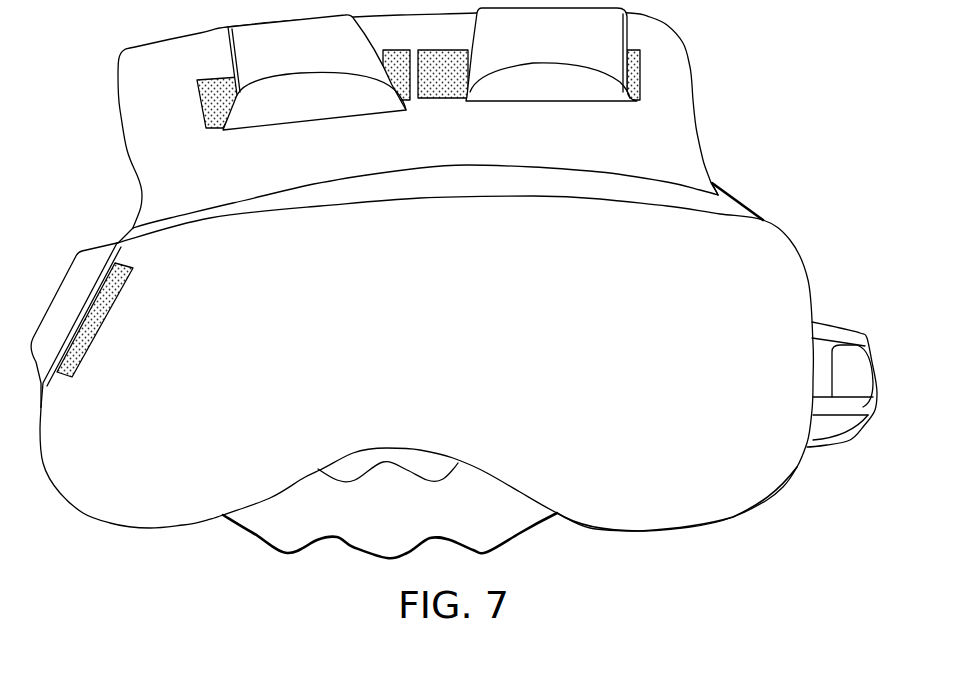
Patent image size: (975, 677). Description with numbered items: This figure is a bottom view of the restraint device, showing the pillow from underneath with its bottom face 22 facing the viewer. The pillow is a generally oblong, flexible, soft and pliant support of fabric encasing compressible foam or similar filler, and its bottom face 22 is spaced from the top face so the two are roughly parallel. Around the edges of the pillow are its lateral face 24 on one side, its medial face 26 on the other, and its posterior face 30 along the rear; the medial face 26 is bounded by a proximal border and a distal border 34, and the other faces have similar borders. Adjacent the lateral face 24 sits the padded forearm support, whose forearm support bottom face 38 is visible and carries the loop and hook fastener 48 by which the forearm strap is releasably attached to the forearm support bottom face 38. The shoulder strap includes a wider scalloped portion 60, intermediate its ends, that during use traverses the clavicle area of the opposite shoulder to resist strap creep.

The bottom face 22 is at (437, 366).
The lateral face 24 is at (133, 228).
The medial face 26 is at (622, 537).
The posterior face 30 is at (818, 286).
The distal border 34 is at (732, 213).
The forearm support bottom face 38 is at (285, 173).
The loop and hook fastener 48 is at (447, 96).
The scalloped portion 60 is at (339, 560).